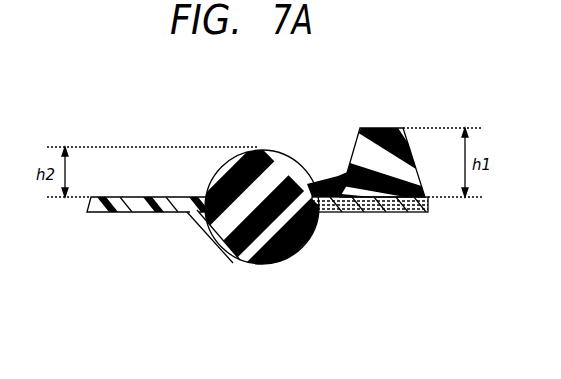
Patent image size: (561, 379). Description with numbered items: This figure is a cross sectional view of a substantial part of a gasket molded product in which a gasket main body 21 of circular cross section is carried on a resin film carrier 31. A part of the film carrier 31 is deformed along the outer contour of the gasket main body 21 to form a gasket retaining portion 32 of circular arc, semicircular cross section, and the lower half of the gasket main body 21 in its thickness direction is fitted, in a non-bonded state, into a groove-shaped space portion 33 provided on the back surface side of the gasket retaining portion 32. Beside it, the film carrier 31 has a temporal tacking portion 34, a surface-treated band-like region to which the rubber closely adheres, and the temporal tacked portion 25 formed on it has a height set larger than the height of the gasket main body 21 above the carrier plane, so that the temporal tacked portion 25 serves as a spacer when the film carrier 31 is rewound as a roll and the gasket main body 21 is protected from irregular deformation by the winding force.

The gasket main body 21 is at (292, 150).
The temporal tacked portion 25 is at (381, 127).
The film carrier 31 is at (133, 213).
The gasket retaining portion 32 is at (231, 263).
The space portion 33 is at (283, 247).
The temporal tacking portion 34 is at (380, 213).